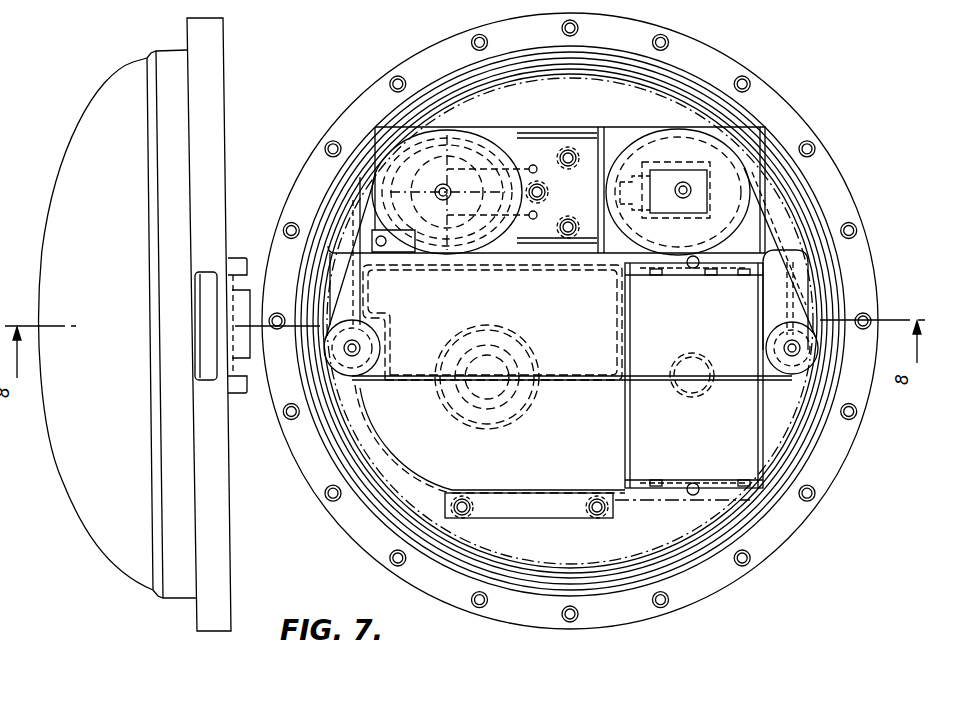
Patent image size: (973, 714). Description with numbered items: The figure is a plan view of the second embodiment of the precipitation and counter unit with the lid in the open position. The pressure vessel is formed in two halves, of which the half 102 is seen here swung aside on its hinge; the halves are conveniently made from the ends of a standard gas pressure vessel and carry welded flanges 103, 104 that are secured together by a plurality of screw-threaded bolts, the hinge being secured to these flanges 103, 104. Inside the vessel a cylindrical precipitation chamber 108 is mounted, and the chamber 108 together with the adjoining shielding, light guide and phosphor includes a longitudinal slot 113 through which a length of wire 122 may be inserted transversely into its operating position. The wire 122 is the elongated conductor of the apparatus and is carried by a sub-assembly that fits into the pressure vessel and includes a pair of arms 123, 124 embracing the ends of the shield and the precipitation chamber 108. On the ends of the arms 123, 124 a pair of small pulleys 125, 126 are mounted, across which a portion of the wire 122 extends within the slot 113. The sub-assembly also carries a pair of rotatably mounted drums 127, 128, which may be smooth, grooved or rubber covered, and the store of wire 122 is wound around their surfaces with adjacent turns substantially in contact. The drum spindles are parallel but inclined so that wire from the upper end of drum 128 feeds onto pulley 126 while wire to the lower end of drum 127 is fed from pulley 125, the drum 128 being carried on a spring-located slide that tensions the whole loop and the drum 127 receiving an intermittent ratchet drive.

The pressure vessel half 102 is at (79, 136).
The welded flange 103 is at (793, 103).
The welded flange 104 is at (213, 89).
The precipitation chamber 108 is at (743, 432).
The longitudinal slot 113 is at (588, 383).
The wire 122 is at (797, 283).
The arm 123 is at (807, 298).
The arm 124 is at (330, 285).
The pulley 125 is at (350, 372).
The pulley 126 is at (818, 350).
The drum 127 is at (457, 133).
The drum 128 is at (683, 131).